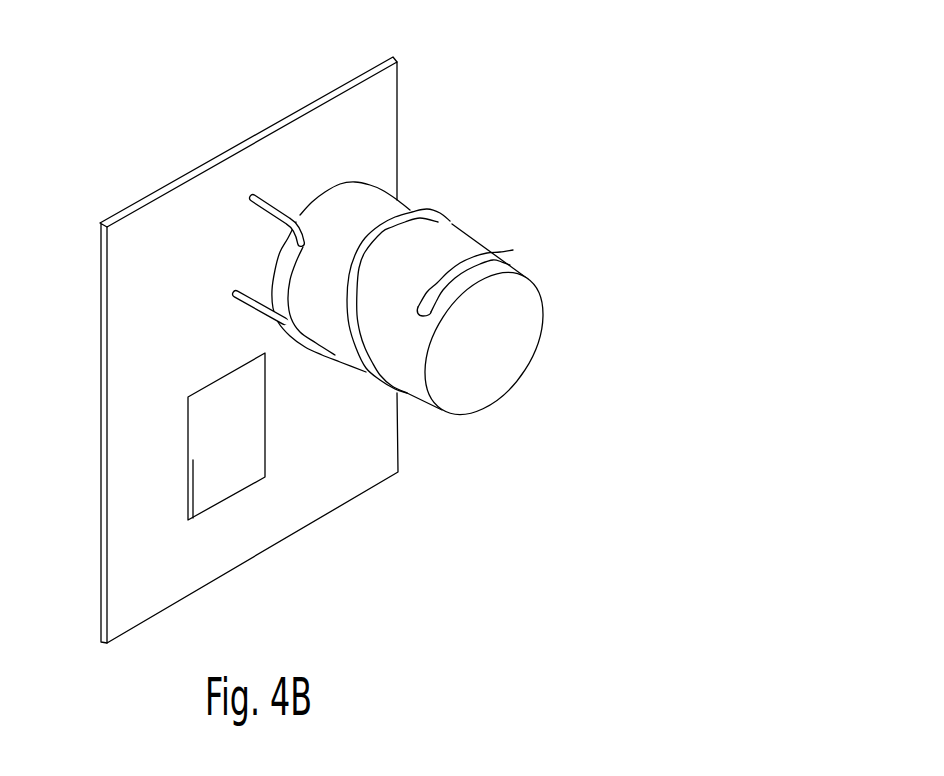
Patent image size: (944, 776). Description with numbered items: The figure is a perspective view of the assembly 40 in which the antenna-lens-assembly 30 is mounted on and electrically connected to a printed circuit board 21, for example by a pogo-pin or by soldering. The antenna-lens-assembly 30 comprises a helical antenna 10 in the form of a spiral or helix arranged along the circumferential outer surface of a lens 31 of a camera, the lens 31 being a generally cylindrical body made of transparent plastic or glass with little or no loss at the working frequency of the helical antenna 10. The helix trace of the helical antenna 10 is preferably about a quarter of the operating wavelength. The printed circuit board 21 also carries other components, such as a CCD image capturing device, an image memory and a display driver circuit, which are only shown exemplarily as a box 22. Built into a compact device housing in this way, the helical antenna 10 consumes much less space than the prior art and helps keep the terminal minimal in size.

The helical antenna 10 is at (511, 263).
The printed circuit board 21 is at (372, 103).
The box 22 is at (235, 457).
The antenna-lens-assembly 30 is at (468, 223).
The lens 31 is at (500, 365).
The assembly 40 is at (128, 177).